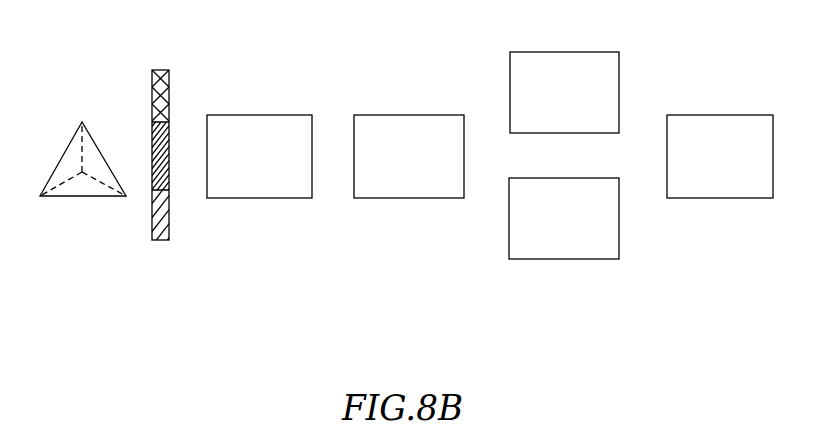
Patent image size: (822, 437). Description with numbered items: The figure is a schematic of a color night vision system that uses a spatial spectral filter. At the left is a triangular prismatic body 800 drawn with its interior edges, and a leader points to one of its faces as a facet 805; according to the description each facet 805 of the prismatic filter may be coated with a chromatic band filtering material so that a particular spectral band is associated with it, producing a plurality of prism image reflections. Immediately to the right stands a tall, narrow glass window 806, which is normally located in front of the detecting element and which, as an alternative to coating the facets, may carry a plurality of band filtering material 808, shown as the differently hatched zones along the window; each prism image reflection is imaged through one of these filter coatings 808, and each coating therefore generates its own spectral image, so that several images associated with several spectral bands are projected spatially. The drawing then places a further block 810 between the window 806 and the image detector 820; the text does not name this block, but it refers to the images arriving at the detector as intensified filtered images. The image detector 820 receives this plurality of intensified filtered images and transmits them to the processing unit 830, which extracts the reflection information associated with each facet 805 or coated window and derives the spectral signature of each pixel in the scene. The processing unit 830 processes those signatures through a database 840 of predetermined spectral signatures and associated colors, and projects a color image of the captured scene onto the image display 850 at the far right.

The sample (triangular pyramid) 800 is at (55, 196).
The facet 805 is at (72, 163).
The glass window 806 is at (163, 240).
The band filtering material 808 is at (152, 198).
The detector block 810 is at (235, 198).
The image detector 820 is at (383, 198).
The processing unit 830 is at (588, 52).
The database 840 is at (538, 259).
The image display 850 is at (697, 115).